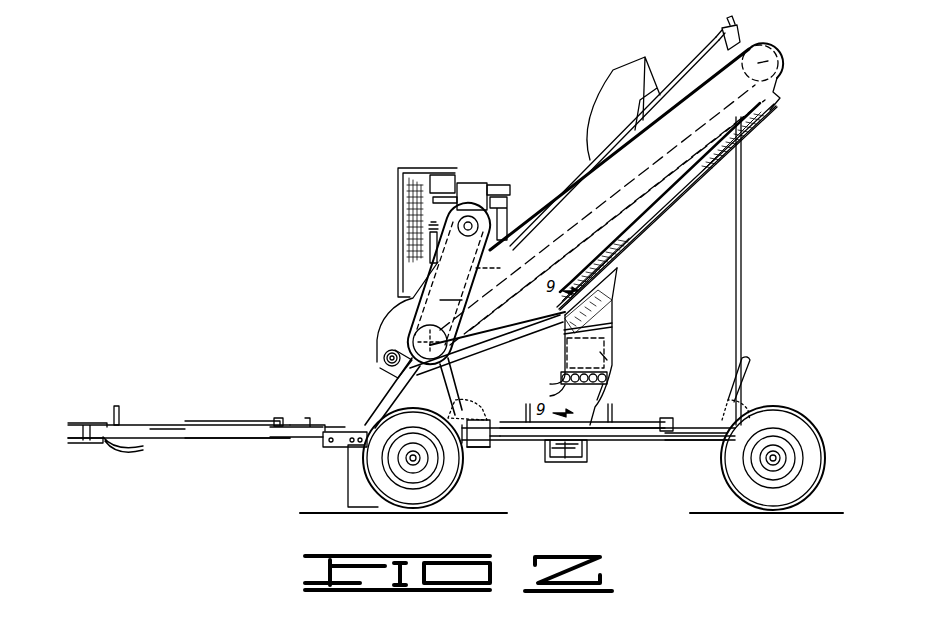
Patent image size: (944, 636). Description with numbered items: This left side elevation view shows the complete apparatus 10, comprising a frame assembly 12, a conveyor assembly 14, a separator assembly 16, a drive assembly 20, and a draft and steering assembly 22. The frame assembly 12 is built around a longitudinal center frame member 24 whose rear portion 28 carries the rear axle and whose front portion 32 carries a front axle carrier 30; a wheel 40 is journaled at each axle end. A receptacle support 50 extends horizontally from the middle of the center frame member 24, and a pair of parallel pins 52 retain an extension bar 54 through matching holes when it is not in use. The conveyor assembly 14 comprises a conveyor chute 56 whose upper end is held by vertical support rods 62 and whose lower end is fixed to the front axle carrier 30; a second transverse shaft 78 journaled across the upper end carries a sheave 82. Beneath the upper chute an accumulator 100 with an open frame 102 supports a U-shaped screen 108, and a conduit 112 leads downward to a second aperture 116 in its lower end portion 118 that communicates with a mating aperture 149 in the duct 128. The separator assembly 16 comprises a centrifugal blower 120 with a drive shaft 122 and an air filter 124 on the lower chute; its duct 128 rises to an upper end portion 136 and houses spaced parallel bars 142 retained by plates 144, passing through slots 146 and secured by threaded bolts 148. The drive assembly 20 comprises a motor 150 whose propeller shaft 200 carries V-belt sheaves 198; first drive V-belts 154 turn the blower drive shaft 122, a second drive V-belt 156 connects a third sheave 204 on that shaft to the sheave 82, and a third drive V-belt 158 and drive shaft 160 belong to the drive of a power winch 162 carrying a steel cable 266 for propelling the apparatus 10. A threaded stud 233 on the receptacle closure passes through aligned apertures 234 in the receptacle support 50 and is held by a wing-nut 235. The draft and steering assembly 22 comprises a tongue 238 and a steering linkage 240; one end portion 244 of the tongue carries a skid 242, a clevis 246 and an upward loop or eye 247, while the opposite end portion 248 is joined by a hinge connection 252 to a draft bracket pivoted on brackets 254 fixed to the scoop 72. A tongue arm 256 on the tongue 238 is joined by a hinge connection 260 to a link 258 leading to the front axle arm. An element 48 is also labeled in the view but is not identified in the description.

The apparatus 10 is at (478, 80).
The frame assembly 12 is at (680, 452).
The conveyor assembly 14 is at (478, 346).
The separator assembly 16 is at (625, 388).
The drive assembly 20 is at (440, 279).
The draft and steering assembly 22 is at (152, 415).
The longitudinal center frame member 24 is at (608, 442).
The rear portion 28 is at (707, 445).
The front axle carrier 30 is at (472, 450).
The front portion 32 is at (498, 442).
The wheel 40 is at (418, 500).
The clamp 48 is at (460, 405).
The receptacle support 50 is at (552, 458).
The pins 52 is at (528, 420).
The extension bar 54 is at (666, 418).
The conveyor chute 56 is at (520, 322).
The support rods 62 is at (742, 212).
The scoop 72 is at (348, 497).
The second transverse shaft 78 is at (777, 48).
The sheave 82 is at (782, 62).
The accumulator 100 is at (690, 207).
The open frame 102 is at (678, 222).
The screen 108 is at (697, 168).
The conduit 112 is at (613, 294).
The second aperture 116 is at (617, 319).
The lower end portion 118 is at (612, 338).
The centrifugal blower 120 is at (385, 323).
The drive shaft 122 is at (434, 352).
The air filter 124 is at (415, 178).
The duct 128 is at (592, 135).
The upper end portion 136 is at (612, 73).
The spaced parallel bars 142 is at (585, 353).
The plates 144 is at (578, 388).
The slots 146 is at (615, 360).
The threaded bolts 148 is at (561, 378).
The mating aperture 149 is at (588, 311).
The motor 150 is at (465, 192).
The first drive V-belts 154 is at (490, 272).
The second drive V-belt 156 is at (650, 170).
The third drive V-belt 158 is at (742, 34).
The drive shaft 160 is at (703, 50).
The power winch 162 is at (384, 355).
The V-belt sheaves 198 is at (510, 188).
The motor propeller shaft 200 is at (507, 200).
The third sheave 204 is at (462, 300).
The threaded stud 233 is at (567, 452).
The aligned apertures 234 is at (560, 449).
The wing-nut 235 is at (572, 448).
The tongue 238 is at (157, 428).
The steering linkage 240 is at (306, 418).
The skid 242 is at (128, 452).
The end portion 244 is at (108, 422).
The clevis 246 is at (75, 443).
The loop or eye 247 is at (117, 405).
The opposite end portion 248 is at (262, 441).
The hinge connection 252 is at (330, 422).
The brackets 254 is at (342, 447).
The tongue arm 256 is at (247, 423).
The link 258 is at (338, 427).
The hinge connection 260 is at (278, 417).
The steel cable 266 is at (385, 363).